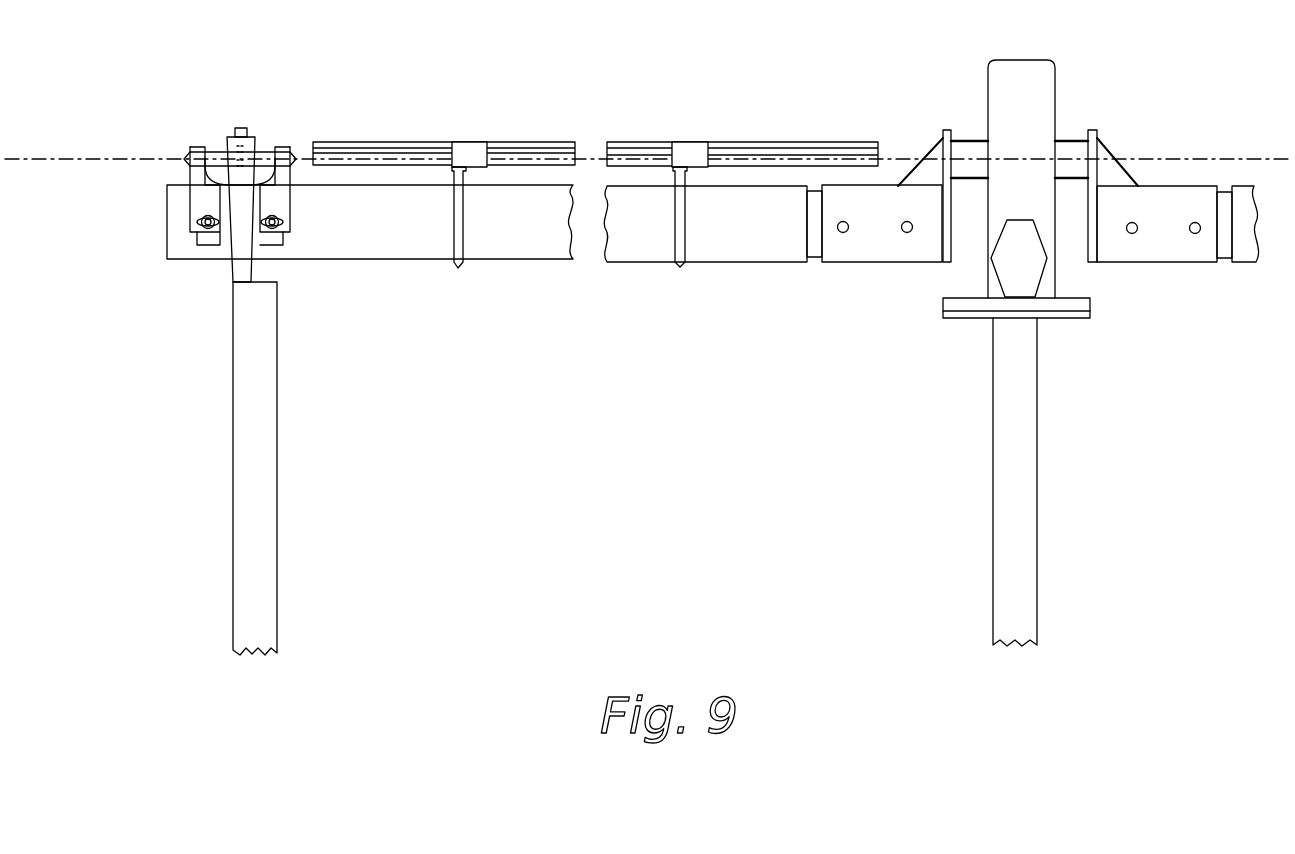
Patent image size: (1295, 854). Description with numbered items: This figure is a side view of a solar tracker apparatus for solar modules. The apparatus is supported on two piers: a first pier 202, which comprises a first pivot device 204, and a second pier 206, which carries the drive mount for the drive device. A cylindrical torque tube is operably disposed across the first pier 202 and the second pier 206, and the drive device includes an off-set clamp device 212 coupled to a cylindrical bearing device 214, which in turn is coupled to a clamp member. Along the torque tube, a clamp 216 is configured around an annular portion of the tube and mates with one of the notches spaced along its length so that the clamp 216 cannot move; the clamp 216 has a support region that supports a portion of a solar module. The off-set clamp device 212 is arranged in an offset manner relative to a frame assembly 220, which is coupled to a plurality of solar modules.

The first pier 202 is at (280, 457).
The first pivot device 204 is at (182, 271).
The second pier 206 is at (1037, 472).
The off-set clamp device 212 is at (930, 157).
The cylindrical bearing device 214 is at (1027, 60).
The clamp 216 is at (463, 271).
The frame assembly 220 is at (470, 142).